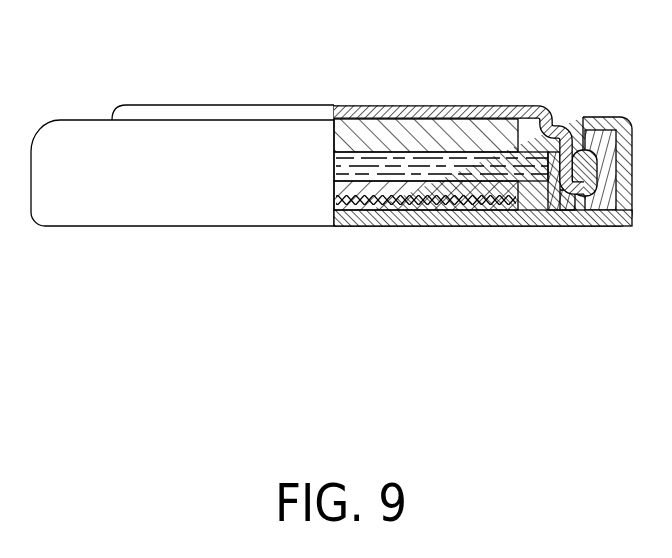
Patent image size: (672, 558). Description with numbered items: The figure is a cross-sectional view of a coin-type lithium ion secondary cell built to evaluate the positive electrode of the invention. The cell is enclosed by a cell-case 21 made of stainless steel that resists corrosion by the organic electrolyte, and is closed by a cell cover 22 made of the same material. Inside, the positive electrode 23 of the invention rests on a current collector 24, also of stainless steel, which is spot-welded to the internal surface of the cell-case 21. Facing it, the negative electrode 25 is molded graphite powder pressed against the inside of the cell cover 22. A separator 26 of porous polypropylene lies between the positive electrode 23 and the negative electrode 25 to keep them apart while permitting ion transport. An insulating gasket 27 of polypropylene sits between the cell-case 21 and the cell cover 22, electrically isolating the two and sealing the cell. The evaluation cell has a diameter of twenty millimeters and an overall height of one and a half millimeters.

The cell-case 21 is at (345, 213).
The cell cover 22 is at (364, 104).
The positive electrode 23 is at (409, 200).
The current collector 24 is at (485, 205).
The negative electrode 25 is at (432, 122).
The separator 26 is at (473, 165).
The insulating gasket 27 is at (552, 202).